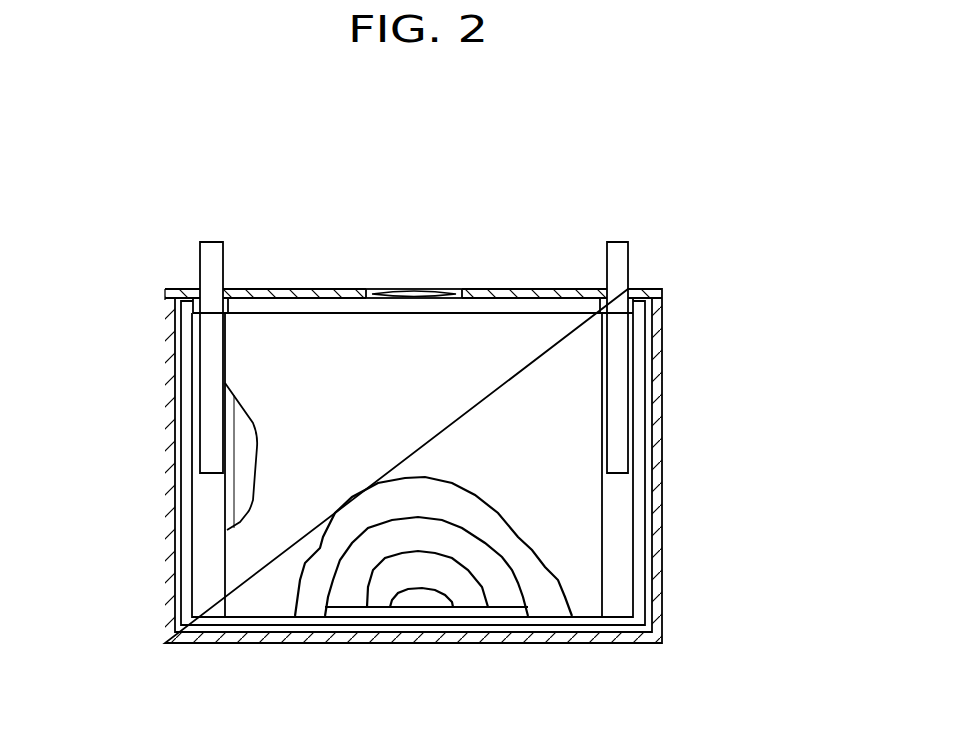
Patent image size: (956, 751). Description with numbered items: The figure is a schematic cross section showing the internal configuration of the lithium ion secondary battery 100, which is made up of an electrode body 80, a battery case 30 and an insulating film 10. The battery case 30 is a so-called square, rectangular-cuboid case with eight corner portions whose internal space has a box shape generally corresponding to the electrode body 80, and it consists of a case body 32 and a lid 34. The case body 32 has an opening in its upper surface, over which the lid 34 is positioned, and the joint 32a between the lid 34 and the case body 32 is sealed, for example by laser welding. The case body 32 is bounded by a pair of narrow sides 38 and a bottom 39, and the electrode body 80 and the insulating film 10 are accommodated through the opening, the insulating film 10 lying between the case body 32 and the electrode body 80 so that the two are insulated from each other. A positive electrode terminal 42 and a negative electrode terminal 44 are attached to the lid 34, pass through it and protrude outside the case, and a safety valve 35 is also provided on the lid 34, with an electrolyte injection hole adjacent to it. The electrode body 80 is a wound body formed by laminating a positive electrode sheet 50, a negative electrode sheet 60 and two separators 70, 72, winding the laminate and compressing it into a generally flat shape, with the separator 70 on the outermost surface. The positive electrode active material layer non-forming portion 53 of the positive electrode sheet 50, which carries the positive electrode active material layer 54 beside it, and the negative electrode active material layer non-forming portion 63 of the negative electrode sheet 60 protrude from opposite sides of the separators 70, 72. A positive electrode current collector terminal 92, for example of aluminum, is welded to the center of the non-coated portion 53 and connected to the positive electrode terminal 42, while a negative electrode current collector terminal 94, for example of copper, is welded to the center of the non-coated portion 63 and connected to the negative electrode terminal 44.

The lithium ion secondary battery 100 is at (664, 256).
The insulating film 10 is at (653, 328).
The battery case 30 is at (666, 385).
The case body 32 is at (665, 625).
The joint 32a is at (162, 298).
The lid 34 is at (575, 289).
The safety valve 35 is at (413, 289).
The narrow sides 38 is at (170, 530).
The bottom 39 is at (533, 645).
The positive electrode terminal 42 is at (210, 247).
The negative electrode terminal 44 is at (616, 247).
The positive electrode sheet 50 is at (313, 602).
The positive electrode active material layer non-forming portion 53 is at (205, 594).
The positive electrode active material layer 54 is at (255, 423).
The negative electrode sheet 60 is at (382, 602).
The negative electrode active material layer non-forming portion 63 is at (625, 500).
The separator 70 is at (428, 597).
The separator 72 is at (352, 602).
The electrode body 80 is at (312, 336).
The positive electrode current collector terminal 92 is at (208, 412).
The negative electrode current collector terminal 94 is at (618, 433).